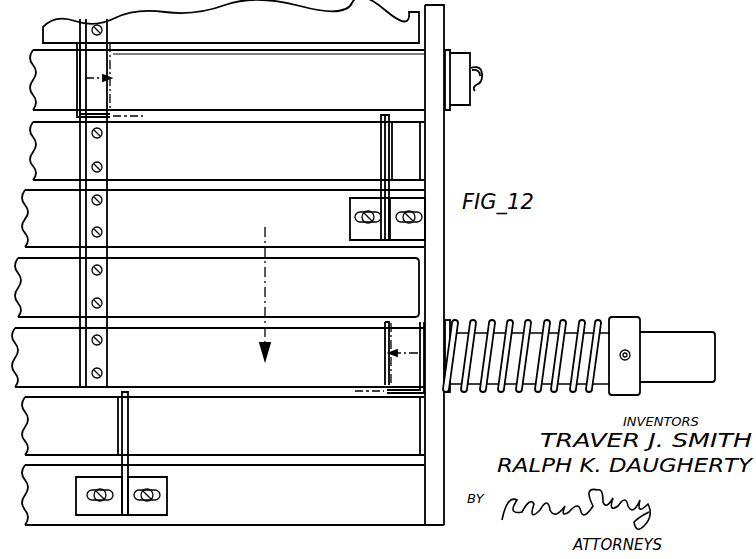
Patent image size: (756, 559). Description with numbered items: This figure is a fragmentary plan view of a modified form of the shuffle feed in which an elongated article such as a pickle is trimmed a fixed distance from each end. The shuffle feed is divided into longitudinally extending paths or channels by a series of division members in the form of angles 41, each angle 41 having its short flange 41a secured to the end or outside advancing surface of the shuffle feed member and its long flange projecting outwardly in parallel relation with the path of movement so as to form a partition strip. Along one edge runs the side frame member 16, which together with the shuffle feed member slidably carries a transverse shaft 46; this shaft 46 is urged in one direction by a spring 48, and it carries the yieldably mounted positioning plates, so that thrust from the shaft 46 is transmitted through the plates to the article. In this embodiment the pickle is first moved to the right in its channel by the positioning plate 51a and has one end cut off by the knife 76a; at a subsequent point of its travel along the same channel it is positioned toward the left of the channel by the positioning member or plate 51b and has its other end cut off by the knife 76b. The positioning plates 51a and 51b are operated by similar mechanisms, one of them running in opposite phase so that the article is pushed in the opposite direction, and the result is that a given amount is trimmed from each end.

The side frame member 16 is at (434, 222).
The angle 41 is at (83, 226).
The short flange 41a is at (100, 220).
The positioning plate 51a is at (78, 70).
The positioning member or plate 51b is at (425, 333).
The knife 76a is at (386, 138).
The knife 76b is at (125, 430).
The spring 48 is at (563, 323).
The transverse shaft 46 is at (669, 345).